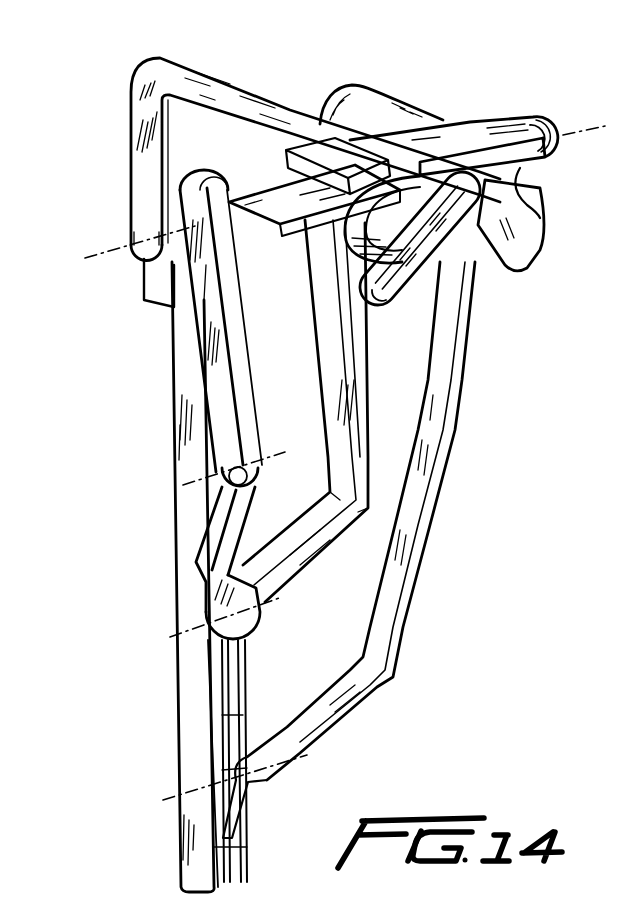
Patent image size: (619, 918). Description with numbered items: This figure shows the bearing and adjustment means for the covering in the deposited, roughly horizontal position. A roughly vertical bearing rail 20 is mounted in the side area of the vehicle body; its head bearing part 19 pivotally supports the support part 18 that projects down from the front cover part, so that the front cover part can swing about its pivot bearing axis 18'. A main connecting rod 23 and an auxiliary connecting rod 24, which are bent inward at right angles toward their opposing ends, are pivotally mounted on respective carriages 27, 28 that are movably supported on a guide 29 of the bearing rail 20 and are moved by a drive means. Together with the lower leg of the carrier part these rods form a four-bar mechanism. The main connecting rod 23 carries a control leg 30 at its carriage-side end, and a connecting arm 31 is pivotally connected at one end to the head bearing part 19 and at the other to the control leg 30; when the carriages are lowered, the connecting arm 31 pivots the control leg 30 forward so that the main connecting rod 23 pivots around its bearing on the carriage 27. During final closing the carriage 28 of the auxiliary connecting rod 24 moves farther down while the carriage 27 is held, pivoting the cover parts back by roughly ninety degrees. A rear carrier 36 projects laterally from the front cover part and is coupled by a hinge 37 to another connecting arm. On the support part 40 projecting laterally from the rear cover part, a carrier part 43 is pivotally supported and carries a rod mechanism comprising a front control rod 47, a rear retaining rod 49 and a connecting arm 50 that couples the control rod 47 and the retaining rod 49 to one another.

The support part 18 is at (277, 159).
The pivot bearing axis 18' is at (110, 208).
The head bearing part 19 is at (163, 270).
The vertical bearing rail 20 is at (183, 523).
The connecting arm 31 is at (203, 367).
The control leg 30 is at (232, 512).
The carriage 27 is at (262, 566).
The guide 29 is at (233, 710).
The carriage 28 is at (247, 790).
The auxiliary connecting rod 24 is at (402, 582).
The main connecting rod 23 is at (343, 410).
The support part 40 is at (288, 207).
The rear carrier 36 is at (457, 140).
The hinge 37 is at (567, 133).
The carrier part 43 is at (523, 177).
The front control rod 47 is at (533, 233).
The rear retaining rod 49 is at (447, 270).
The connecting arm 50 is at (407, 283).